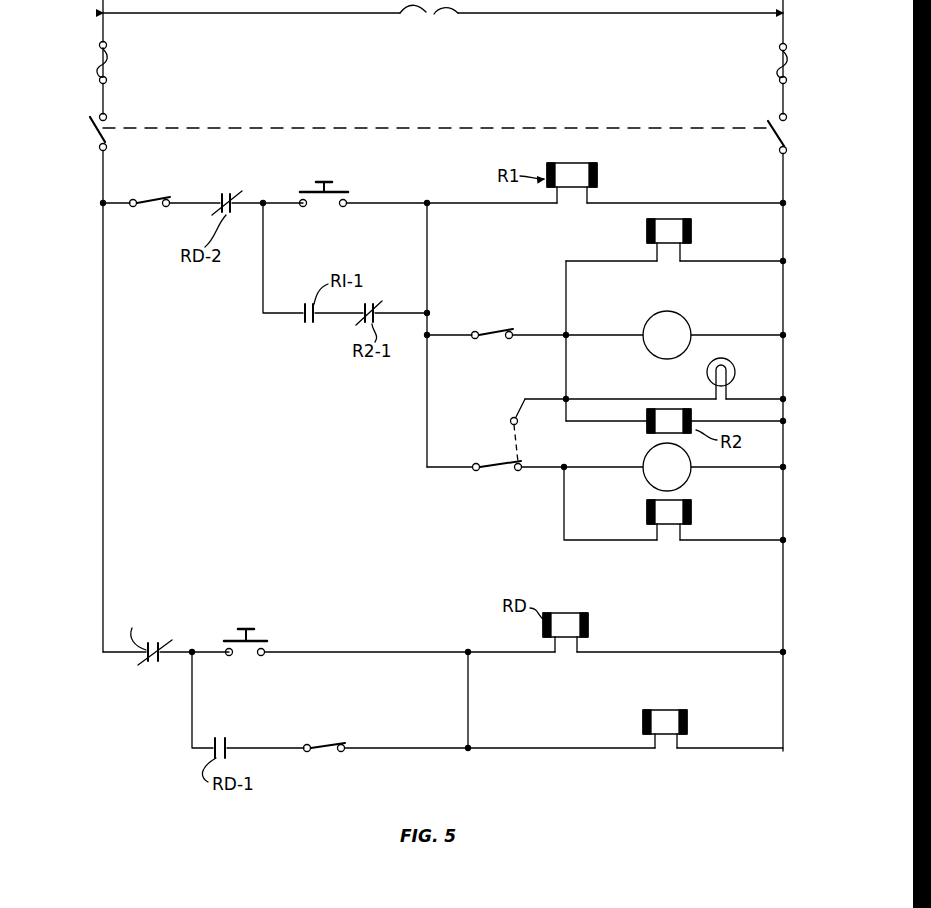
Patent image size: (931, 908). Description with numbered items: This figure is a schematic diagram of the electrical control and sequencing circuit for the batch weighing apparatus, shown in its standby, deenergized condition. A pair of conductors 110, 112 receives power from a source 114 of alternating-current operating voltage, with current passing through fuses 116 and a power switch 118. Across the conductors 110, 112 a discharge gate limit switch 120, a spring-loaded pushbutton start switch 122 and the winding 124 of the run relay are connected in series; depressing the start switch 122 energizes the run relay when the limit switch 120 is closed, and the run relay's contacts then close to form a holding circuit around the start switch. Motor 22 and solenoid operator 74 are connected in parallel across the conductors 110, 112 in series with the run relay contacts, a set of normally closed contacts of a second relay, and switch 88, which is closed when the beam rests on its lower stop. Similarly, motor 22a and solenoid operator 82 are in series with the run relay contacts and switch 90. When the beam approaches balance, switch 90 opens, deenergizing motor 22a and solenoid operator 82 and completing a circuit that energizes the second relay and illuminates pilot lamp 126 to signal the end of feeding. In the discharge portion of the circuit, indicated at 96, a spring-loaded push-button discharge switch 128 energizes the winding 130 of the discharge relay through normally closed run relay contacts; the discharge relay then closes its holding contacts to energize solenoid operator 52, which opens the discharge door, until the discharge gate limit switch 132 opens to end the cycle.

The source of A.C. operating voltage 114 is at (430, 12).
The conductor 112 is at (103, 263).
The conductor 110 is at (785, 436).
The fuses 116 is at (108, 68).
The power switch 118 is at (94, 128).
The discharge gate limit switch 120 is at (158, 200).
The spring-loaded pushbutton start switch 122 is at (338, 193).
The winding of run relay R1 124 is at (598, 175).
The solenoid operator 74 is at (694, 232).
The switch 88 is at (508, 330).
The motor 22 is at (663, 359).
The pilot lamp 126 is at (736, 372).
The switch 90 is at (498, 462).
The motor 22a is at (692, 478).
The solenoid operator 82 is at (694, 516).
The reset circuit 96 is at (128, 708).
The spring-loaded push-button discharge switch 128 is at (252, 640).
The winding of discharge relay RD 130 is at (591, 628).
The discharge gate limit switch 132 is at (322, 745).
The solenoid operator 52 is at (672, 716).